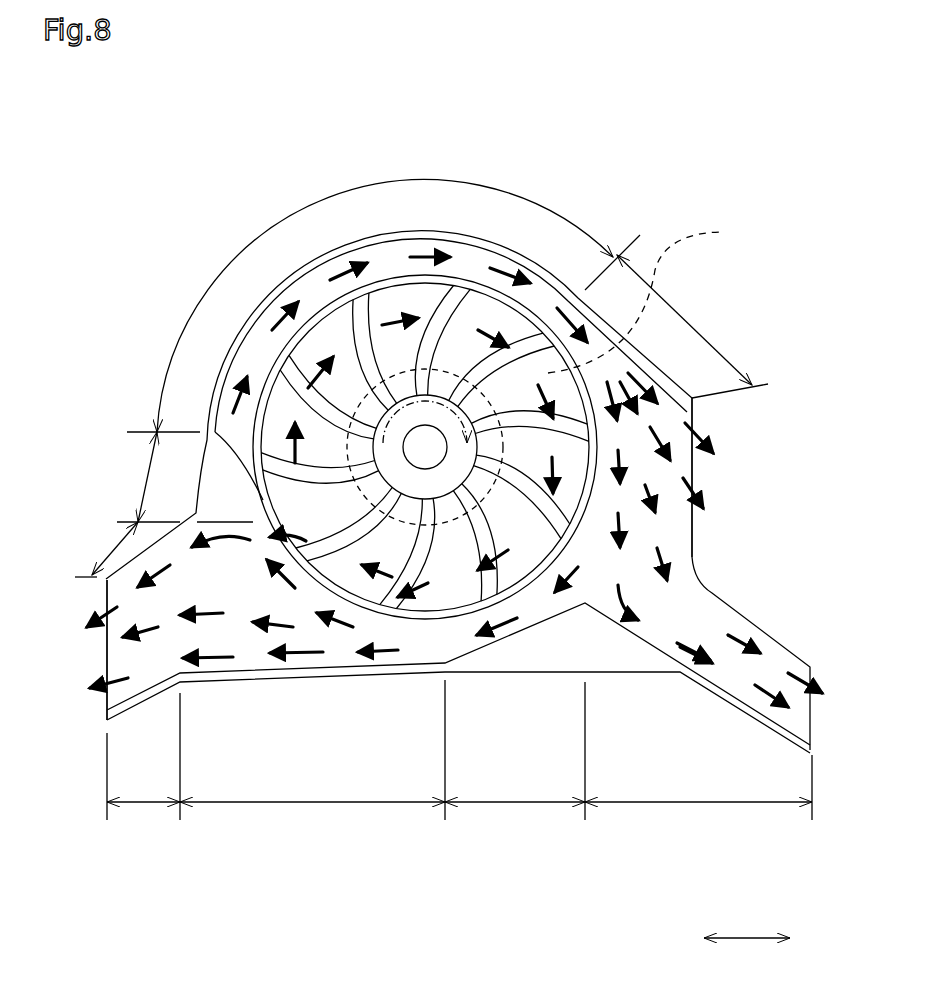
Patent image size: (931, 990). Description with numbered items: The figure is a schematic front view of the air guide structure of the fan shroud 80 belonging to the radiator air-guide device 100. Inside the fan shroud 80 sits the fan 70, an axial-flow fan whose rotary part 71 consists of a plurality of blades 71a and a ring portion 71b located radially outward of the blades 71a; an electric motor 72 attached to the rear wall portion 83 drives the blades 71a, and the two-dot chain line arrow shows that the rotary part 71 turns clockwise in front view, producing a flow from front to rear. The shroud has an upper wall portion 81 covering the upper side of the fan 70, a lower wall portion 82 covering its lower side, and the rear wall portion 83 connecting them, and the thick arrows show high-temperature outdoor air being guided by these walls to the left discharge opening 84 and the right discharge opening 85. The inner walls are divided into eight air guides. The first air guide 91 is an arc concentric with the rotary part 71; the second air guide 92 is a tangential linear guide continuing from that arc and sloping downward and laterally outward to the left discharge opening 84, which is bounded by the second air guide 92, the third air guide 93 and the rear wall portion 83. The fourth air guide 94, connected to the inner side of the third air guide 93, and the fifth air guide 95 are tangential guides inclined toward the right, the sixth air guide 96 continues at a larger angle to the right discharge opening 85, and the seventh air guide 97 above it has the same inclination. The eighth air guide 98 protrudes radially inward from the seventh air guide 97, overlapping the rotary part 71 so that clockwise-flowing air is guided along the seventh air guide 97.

The radiator air-guide device 100 is at (150, 182).
The fan 70 is at (660, 188).
The rotary part 71 is at (598, 136).
The blades 71a is at (515, 323).
The ring portion 71b is at (470, 287).
The electric motor 72 is at (706, 233).
The fan shroud 80 is at (157, 333).
The upper wall portion 81 is at (379, 240).
The lower wall portion 82 is at (353, 672).
The rear wall portion 83 is at (680, 522).
The left discharge opening 84 is at (764, 487).
The right discharge opening 85 is at (88, 655).
The first air guide 91 is at (385, 290).
The second air guide 92 is at (676, 316).
The third air guide 93 is at (698, 831).
The fourth air guide 94 is at (515, 831).
The fifth air guide 95 is at (312, 831).
The sixth air guide 96 is at (143, 831).
The seventh air guide 97 is at (92, 549).
The eighth air guide 98 is at (137, 477).